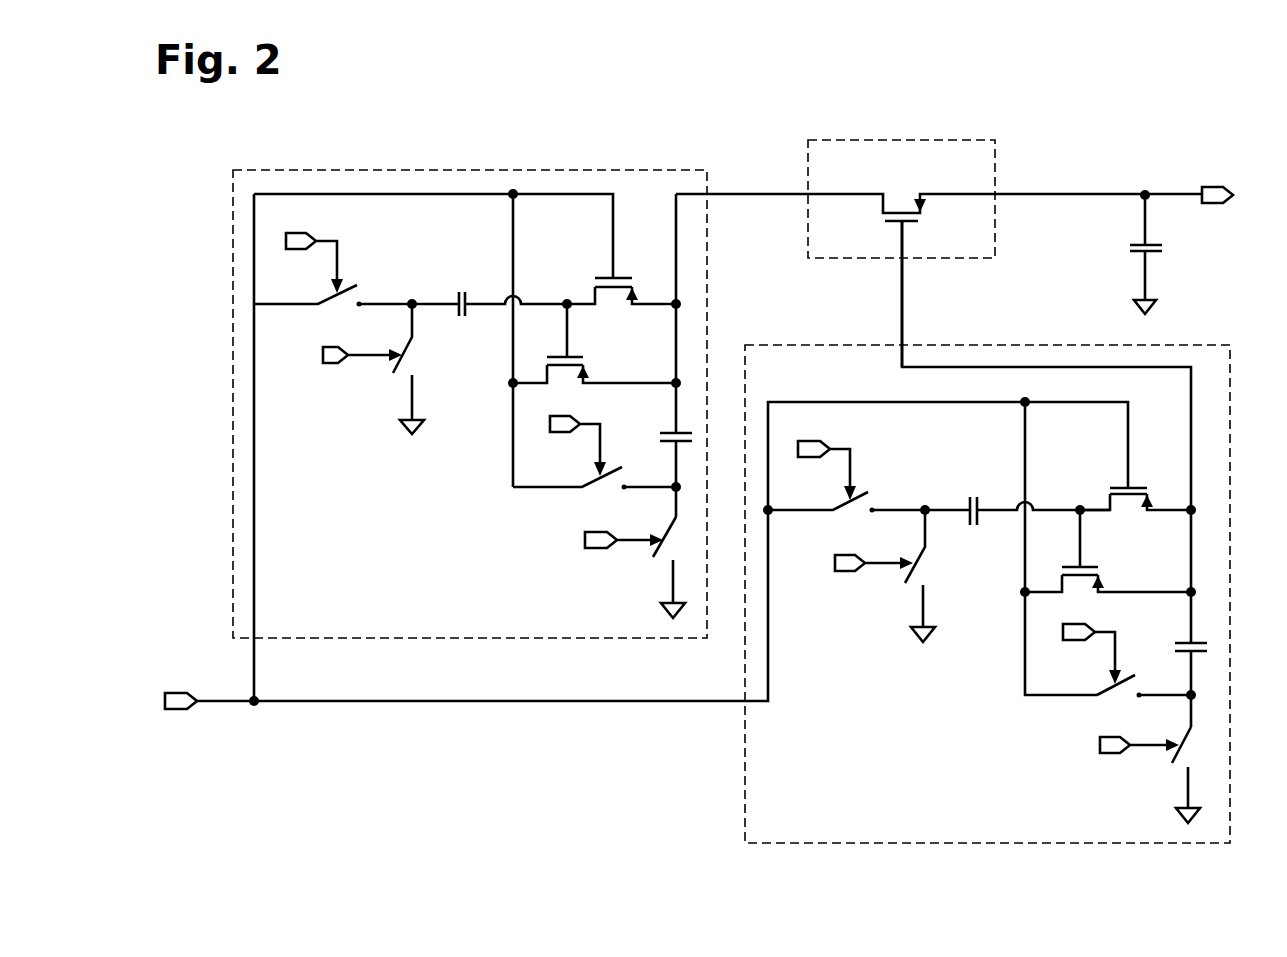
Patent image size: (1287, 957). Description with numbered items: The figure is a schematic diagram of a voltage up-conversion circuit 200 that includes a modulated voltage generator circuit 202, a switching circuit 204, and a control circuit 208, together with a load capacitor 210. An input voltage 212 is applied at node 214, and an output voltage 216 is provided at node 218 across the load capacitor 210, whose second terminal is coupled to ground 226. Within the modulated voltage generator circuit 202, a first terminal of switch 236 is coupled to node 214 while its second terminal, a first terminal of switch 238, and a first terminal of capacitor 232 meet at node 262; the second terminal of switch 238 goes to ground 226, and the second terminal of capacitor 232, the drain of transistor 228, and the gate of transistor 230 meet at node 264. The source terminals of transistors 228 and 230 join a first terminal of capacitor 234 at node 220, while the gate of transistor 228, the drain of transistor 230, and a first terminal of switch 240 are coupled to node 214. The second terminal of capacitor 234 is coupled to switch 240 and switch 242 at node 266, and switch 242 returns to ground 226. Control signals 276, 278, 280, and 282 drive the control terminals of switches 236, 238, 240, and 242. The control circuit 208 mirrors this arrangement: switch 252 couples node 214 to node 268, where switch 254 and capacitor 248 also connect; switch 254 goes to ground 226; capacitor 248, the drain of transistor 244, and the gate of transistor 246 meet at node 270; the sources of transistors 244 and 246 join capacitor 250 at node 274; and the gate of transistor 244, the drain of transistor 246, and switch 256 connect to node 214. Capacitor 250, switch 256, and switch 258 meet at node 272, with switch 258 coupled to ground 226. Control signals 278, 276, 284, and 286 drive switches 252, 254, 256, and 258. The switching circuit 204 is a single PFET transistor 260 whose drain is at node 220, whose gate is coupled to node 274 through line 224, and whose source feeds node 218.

The voltage up-conversion circuit 200 is at (1207, 101).
The modulated voltage generator circuit 202 is at (547, 170).
The switching circuit 204 is at (870, 140).
The control circuit 208 is at (805, 345).
The load capacitor 210 is at (1134, 244).
The input voltage 212 is at (187, 712).
The node 214 is at (253, 708).
The output voltage 216 is at (1210, 208).
The node 218 is at (1146, 191).
The node 220 is at (674, 309).
The line 224 is at (904, 300).
The ground 226 is at (400, 424).
The transistor 228 is at (625, 277).
The transistor 230 is at (583, 356).
The capacitor 232 is at (459, 297).
The capacitor 234 is at (662, 433).
The switch 236 is at (337, 306).
The switch 238 is at (416, 340).
The switch 240 is at (597, 490).
The switch 242 is at (670, 524).
The transistor 244 is at (1138, 487).
The transistor 246 is at (1092, 566).
The capacitor 248 is at (969, 501).
The capacitor 250 is at (1178, 643).
The switch 252 is at (848, 512).
The switch 254 is at (928, 551).
The switch 256 is at (1113, 697).
The switch 258 is at (1182, 739).
The transistor 260 is at (888, 228).
The node 262 is at (411, 300).
The node 264 is at (567, 300).
The node 266 is at (672, 485).
The node 268 is at (924, 506).
The node 270 is at (1080, 506).
The node 272 is at (1188, 694).
The node 274 is at (1188, 514).
The control signal 276 is at (297, 236).
The control signal 278 is at (329, 365).
The control signal 280 is at (562, 433).
The control signal 282 is at (598, 548).
The control signal 284 is at (1080, 642).
The control signal 286 is at (1118, 756).